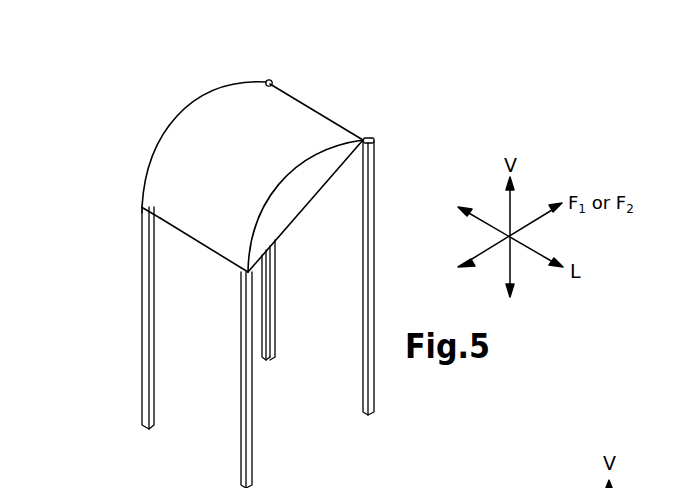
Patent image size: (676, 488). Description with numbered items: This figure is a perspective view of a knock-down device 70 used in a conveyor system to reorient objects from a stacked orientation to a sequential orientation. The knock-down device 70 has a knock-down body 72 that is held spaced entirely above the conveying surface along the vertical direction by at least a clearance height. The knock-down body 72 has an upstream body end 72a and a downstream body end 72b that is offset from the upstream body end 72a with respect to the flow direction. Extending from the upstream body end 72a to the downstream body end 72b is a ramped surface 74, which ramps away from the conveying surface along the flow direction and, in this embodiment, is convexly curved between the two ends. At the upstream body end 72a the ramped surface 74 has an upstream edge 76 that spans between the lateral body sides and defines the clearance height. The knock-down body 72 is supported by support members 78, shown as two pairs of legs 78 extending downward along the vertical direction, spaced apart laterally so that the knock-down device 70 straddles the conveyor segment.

The knock-down device 70 is at (352, 98).
The knock-down body 72 is at (262, 127).
The upstream body end 72a is at (139, 204).
The downstream body end 72b is at (364, 138).
The ramped surface 74 is at (193, 142).
The upstream edge 76 is at (202, 252).
The support member 78 is at (140, 321).